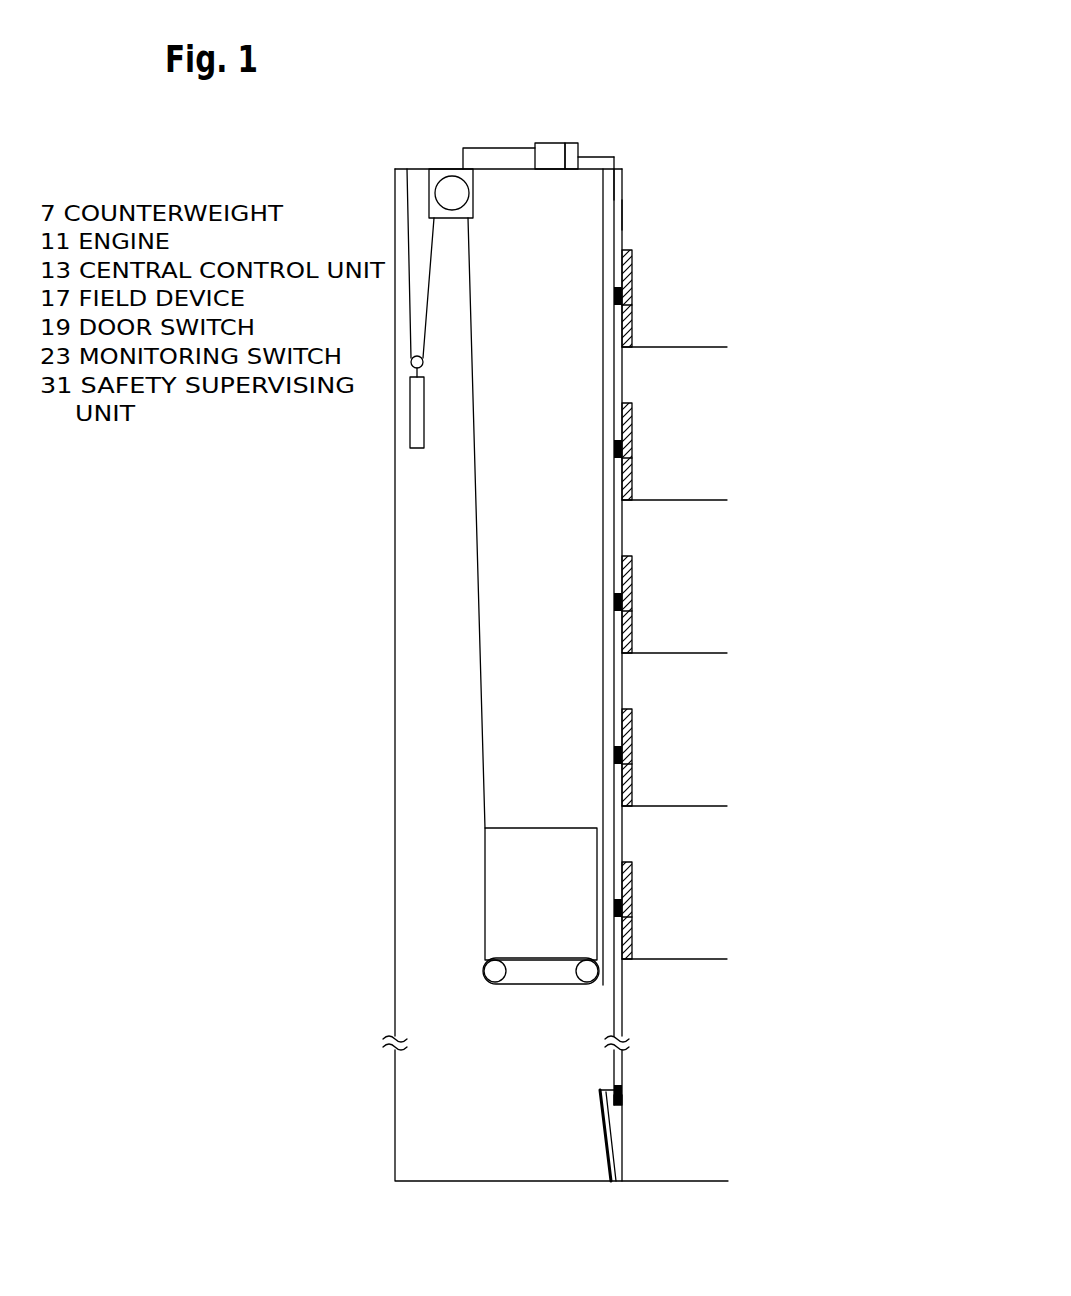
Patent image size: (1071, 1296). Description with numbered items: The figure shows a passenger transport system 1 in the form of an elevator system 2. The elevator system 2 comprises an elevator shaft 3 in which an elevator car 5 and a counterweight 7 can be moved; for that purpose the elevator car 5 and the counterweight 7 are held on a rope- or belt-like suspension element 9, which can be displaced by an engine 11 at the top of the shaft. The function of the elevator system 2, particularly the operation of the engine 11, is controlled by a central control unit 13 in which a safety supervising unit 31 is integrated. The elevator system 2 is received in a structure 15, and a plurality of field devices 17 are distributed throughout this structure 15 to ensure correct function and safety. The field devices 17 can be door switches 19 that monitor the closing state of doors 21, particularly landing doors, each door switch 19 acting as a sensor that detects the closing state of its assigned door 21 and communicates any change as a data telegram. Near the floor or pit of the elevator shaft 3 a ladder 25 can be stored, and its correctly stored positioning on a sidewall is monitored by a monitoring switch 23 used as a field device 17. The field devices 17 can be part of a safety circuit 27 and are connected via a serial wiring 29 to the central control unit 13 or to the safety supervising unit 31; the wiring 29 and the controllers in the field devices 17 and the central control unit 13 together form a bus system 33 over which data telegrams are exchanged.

The passenger transport system 1 is at (845, 145).
The elevator system 2 is at (823, 228).
The elevator shaft 3 is at (554, 618).
The elevator car 5 is at (554, 908).
The counterweight 7 is at (415, 450).
The suspension element 9 is at (476, 462).
The engine 11 is at (495, 207).
The central control unit 13 is at (554, 143).
The structure 15 is at (805, 320).
The field device 17 is at (622, 294).
The door switch 19 is at (630, 307).
The door 21 is at (630, 261).
The monitoring switch 23 is at (623, 1100).
The ladder 25 is at (610, 1147).
The safety circuit 27 is at (631, 212).
The serial wiring 29 is at (617, 183).
The safety supervising unit 31 is at (578, 148).
The bus system 33 is at (720, 295).